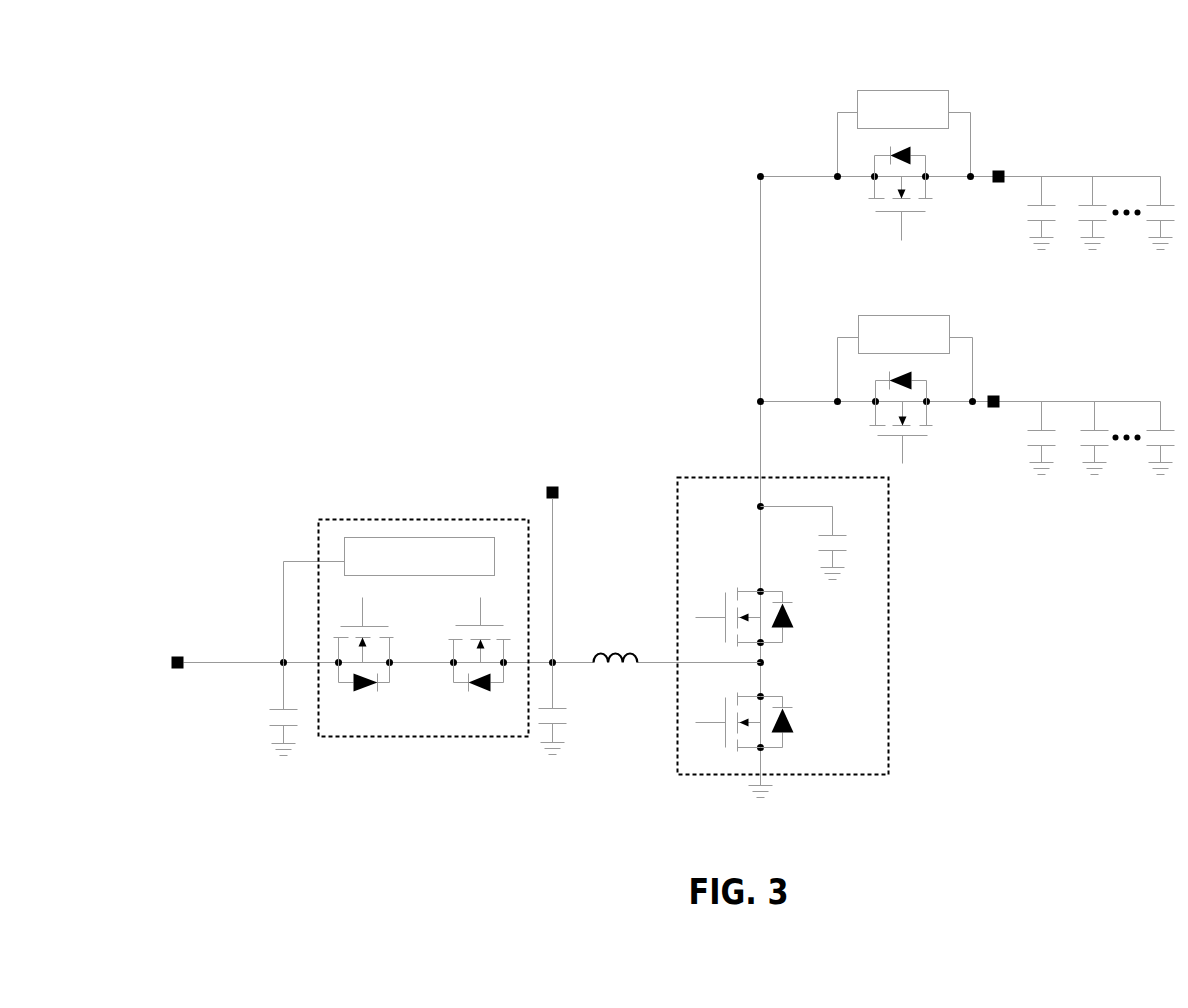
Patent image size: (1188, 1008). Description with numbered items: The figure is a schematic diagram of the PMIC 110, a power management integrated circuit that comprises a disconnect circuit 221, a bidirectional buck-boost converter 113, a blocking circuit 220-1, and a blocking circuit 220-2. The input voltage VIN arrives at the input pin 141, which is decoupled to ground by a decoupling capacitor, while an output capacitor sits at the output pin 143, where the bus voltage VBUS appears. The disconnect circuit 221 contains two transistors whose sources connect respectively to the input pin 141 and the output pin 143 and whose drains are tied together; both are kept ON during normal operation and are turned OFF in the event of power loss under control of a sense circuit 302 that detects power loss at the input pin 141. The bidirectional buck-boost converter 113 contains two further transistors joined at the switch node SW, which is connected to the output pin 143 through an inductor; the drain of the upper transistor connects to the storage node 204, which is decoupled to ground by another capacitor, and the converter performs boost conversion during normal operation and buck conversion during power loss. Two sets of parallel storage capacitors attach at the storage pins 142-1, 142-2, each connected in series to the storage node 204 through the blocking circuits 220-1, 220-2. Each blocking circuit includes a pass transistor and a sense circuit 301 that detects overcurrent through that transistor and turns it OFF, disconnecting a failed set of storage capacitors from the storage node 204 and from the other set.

The PMIC 110 is at (506, 262).
The bidirectional buck-boost converter 113 is at (691, 477).
The input pin 141 is at (177, 656).
The storage pin 142-1 is at (990, 394).
The storage pin 142-2 is at (995, 169).
The output pin 143 is at (546, 488).
The storage node 204 is at (755, 401).
The blocking circuit 220-1 is at (853, 282).
The blocking circuit 220-2 is at (847, 58).
The disconnect circuit 221 is at (352, 519).
The sense circuit 301 is at (904, 222).
The sense circuit 302 is at (420, 557).